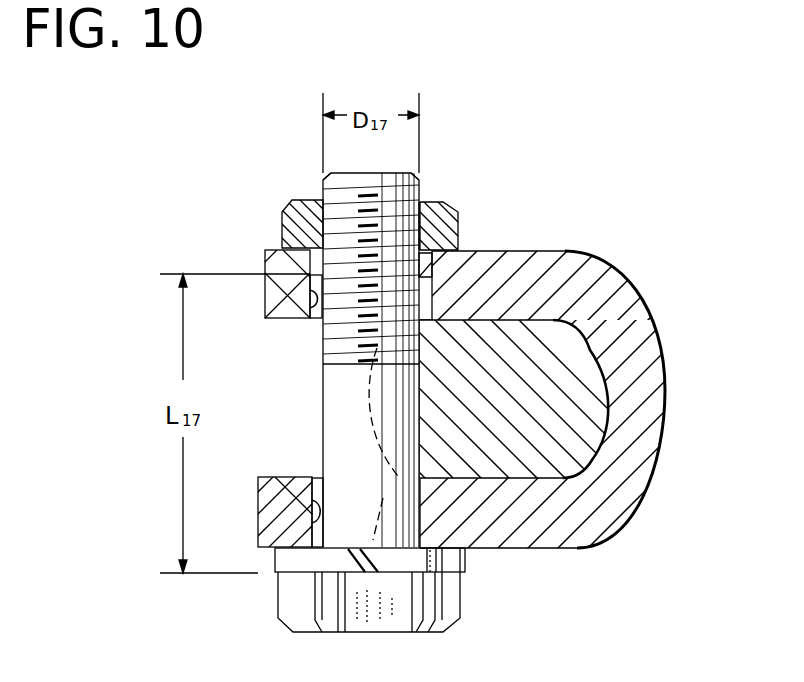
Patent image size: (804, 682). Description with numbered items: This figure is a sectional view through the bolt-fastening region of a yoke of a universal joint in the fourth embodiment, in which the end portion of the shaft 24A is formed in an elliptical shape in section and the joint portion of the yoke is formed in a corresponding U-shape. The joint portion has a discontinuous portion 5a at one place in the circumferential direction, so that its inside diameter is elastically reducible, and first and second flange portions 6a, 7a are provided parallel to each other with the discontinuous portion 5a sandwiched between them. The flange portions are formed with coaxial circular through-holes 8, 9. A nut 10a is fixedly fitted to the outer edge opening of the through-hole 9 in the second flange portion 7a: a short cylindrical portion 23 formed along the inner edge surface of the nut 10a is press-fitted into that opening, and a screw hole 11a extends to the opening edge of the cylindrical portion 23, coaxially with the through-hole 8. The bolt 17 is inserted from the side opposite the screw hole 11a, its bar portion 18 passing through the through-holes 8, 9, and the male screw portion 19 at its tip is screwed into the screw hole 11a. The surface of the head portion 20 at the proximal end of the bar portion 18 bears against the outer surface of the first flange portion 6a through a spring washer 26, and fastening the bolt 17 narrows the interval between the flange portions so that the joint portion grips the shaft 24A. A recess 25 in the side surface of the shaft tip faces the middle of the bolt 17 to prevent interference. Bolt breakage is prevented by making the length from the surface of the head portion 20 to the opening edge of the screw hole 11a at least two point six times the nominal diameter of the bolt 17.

The bolt 17 is at (337, 430).
The male screw portion 19 is at (420, 186).
The discontinuous portion 5a is at (298, 340).
The second flange portion 7a is at (283, 265).
The through-hole 9 is at (318, 297).
The first flange portion 6a is at (292, 480).
The through-hole 8 is at (318, 508).
The nut 10a is at (447, 228).
The screw hole 11a is at (440, 212).
The cylindrical portion 23 is at (437, 265).
The shaft 24A is at (583, 395).
The recess 25 is at (484, 425).
The spring washer 26 is at (305, 562).
The bar portion 18 is at (376, 535).
The head portion 20 is at (393, 600).